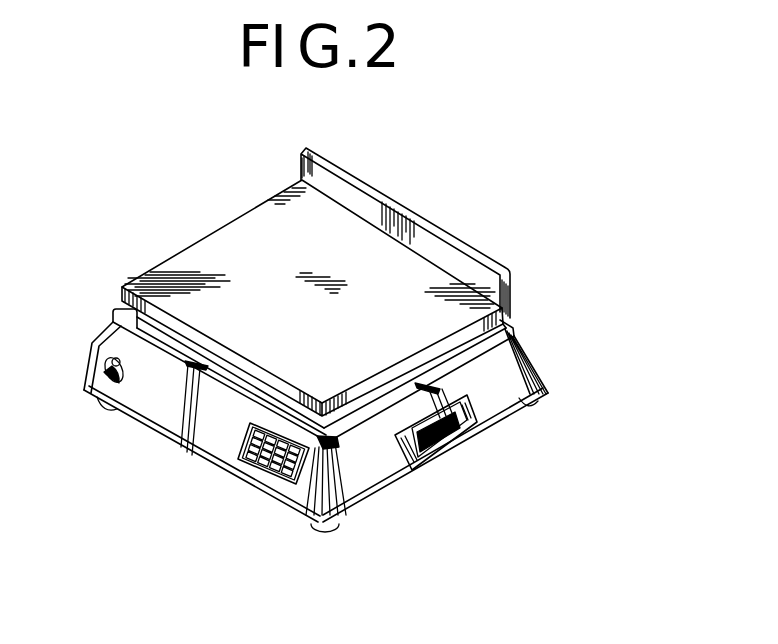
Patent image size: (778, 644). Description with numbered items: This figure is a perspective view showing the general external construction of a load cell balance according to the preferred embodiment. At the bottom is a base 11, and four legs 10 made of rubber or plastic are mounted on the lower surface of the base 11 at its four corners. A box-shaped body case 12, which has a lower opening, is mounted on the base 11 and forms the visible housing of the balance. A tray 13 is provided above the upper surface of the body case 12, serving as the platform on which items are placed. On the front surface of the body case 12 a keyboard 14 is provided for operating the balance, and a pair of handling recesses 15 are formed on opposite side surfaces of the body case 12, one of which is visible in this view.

The legs 10 is at (329, 531).
The base 11 is at (400, 486).
The body case 12 is at (502, 377).
The tray 13 is at (403, 267).
The keyboard 14 is at (258, 455).
The handling recesses 15 is at (458, 423).